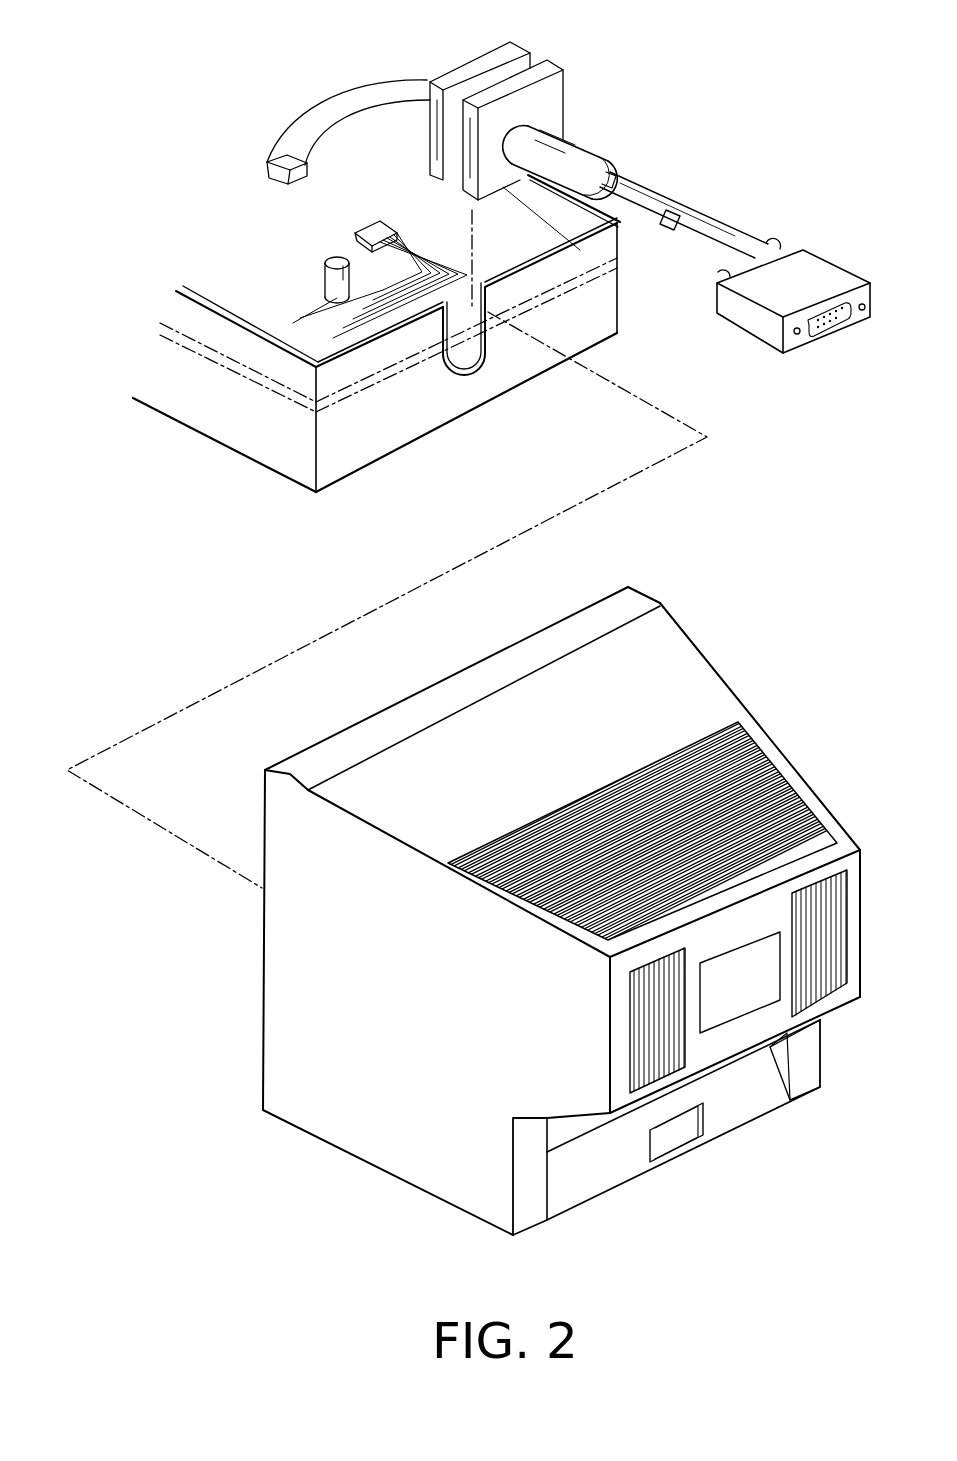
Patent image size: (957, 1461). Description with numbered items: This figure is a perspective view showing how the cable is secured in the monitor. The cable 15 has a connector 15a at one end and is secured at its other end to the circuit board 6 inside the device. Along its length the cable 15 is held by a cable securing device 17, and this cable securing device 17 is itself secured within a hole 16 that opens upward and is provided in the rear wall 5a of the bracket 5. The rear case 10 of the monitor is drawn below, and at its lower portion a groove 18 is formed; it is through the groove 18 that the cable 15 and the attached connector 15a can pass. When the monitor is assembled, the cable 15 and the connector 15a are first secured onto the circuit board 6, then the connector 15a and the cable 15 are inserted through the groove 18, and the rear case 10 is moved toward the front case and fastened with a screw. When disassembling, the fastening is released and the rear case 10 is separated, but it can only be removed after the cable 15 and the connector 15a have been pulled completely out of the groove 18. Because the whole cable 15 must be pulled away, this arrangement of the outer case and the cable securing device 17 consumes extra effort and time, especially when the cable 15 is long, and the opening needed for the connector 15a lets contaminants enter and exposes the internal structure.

The bracket 5 is at (262, 318).
The rear wall 5a is at (610, 298).
The circuit board 6 is at (237, 295).
The rear case 10 is at (787, 728).
The cable 15 is at (635, 198).
The connector 15a is at (800, 282).
The hole 16 is at (468, 352).
The cable securing device 17 is at (584, 128).
The groove 18 is at (678, 1132).